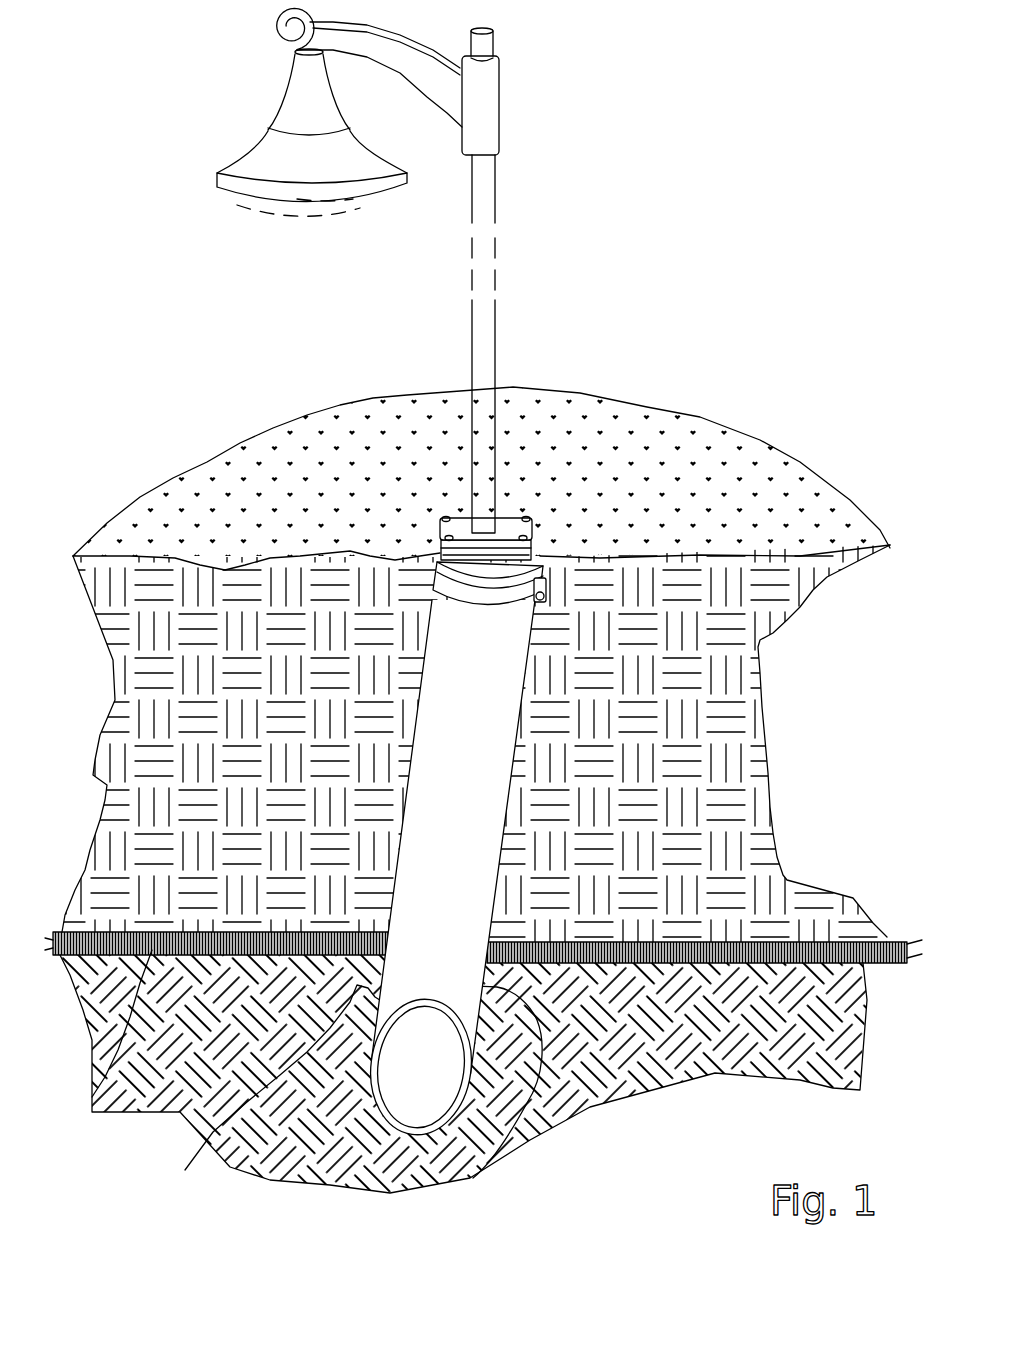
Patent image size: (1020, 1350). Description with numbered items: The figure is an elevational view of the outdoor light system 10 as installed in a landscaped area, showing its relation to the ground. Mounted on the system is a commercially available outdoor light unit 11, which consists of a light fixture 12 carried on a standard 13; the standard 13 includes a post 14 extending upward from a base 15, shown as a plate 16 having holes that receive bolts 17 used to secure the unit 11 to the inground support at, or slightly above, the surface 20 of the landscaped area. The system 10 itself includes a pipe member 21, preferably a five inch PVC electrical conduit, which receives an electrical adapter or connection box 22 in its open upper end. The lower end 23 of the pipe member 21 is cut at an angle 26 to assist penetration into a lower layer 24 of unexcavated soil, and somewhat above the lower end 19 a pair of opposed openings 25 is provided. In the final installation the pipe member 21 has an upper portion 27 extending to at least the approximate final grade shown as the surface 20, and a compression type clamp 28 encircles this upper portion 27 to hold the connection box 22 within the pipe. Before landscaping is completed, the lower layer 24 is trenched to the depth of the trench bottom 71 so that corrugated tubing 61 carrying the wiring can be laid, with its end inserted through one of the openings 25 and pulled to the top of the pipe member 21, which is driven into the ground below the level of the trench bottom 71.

The outdoor light system 10 is at (543, 622).
The outdoor light unit 11 is at (536, 195).
The light fixture 12 is at (280, 108).
The standard 13 is at (497, 282).
The post 14 is at (482, 345).
The base 15 is at (513, 518).
The plate 16 is at (460, 518).
The bolts 17 is at (543, 553).
The lower end of the pipe member 19 is at (441, 985).
The surface 20 is at (336, 446).
The pipe member 21 is at (410, 753).
The connection box 22 is at (545, 556).
The lower end 23 is at (271, 1093).
The lower layer 24 is at (141, 1025).
The openings 25 is at (388, 930).
The angle 26 is at (473, 1178).
The upper portion 27 is at (453, 627).
The compression type clamp 28 is at (245, 447).
The corrugated tubing 61 is at (805, 952).
The trench bottom 71 is at (246, 1005).